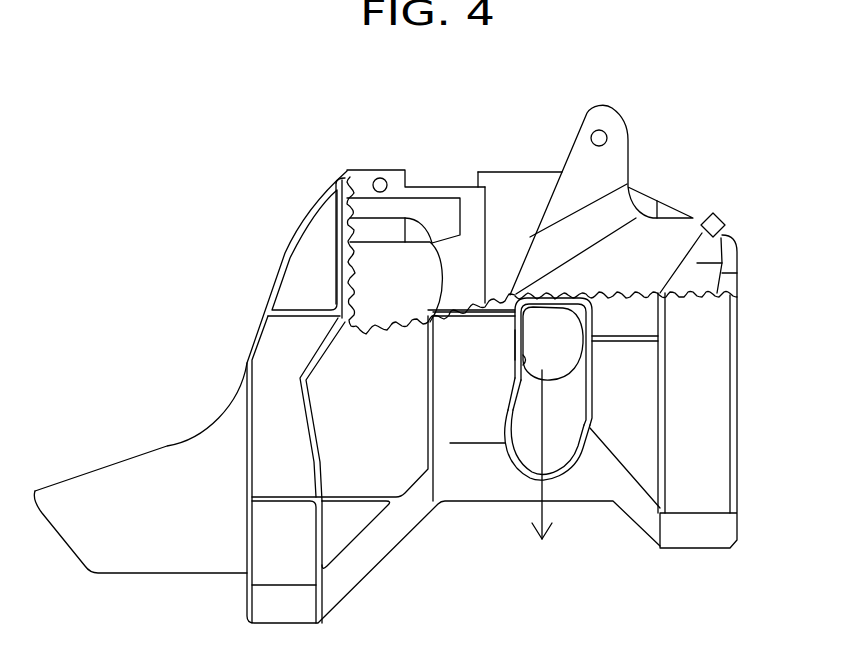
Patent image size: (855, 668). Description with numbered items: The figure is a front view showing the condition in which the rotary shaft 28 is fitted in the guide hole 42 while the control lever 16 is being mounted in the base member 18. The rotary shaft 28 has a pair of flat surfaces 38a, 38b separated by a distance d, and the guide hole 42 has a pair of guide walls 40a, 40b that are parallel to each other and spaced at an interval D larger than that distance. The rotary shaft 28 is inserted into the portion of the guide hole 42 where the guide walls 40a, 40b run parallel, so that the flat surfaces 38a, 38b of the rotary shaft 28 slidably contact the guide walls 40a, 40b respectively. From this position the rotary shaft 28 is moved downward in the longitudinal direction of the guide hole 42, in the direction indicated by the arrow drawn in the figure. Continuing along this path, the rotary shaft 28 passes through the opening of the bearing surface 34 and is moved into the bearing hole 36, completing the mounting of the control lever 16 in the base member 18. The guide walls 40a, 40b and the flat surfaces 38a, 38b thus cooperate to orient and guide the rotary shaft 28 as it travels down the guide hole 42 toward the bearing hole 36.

The control lever 16 is at (641, 152).
The base member 18 is at (178, 178).
The rotary shaft 28 is at (586, 315).
The bearing surface 34 is at (517, 470).
The bearing hole 36 is at (574, 489).
The flat surface 38a is at (586, 346).
The flat surface 38b is at (522, 332).
The guide wall 40a is at (583, 390).
The guide wall 40b is at (524, 362).
The guide hole 42 is at (505, 345).